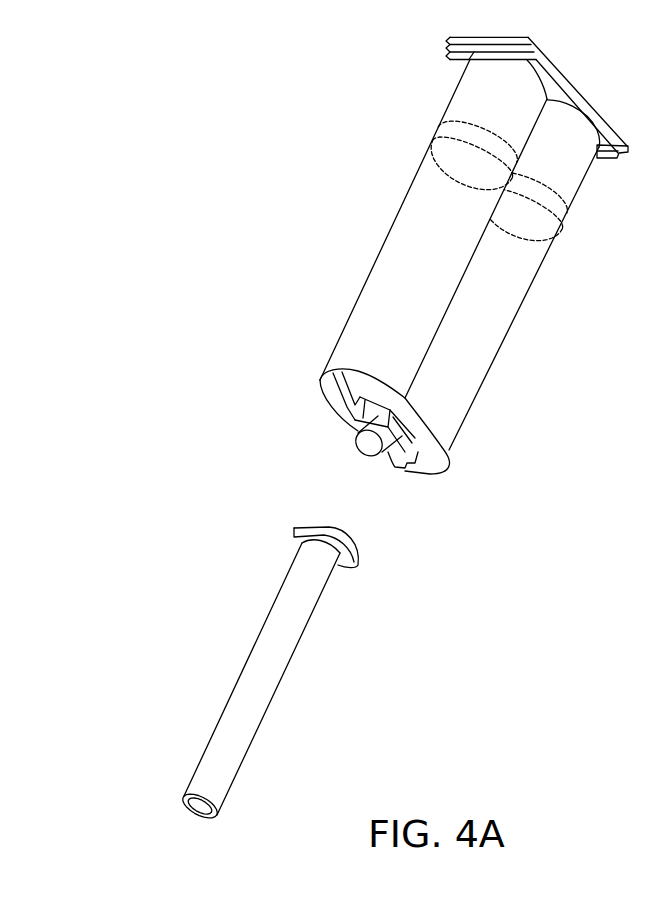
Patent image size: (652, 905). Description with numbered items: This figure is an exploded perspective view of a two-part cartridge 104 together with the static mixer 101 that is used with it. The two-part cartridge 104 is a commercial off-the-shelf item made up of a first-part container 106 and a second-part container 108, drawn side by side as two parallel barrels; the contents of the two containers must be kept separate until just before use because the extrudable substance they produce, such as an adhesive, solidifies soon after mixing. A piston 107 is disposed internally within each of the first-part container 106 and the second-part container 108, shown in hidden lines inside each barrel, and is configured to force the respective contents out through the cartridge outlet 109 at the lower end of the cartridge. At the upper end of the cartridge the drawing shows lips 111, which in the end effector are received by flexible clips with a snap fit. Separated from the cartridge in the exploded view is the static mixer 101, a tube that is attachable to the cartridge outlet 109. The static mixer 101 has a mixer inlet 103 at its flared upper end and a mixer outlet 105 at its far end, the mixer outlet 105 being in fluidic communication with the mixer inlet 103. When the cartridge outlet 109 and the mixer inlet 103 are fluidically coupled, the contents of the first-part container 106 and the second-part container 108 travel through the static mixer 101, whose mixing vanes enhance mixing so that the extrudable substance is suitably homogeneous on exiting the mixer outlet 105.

The static mixer 101 is at (238, 686).
The mixer inlet 103 is at (279, 544).
The two-part cartridge 104 is at (380, 256).
The mixer outlet 105 is at (169, 810).
The first-part container 106 is at (343, 328).
The piston 107 is at (438, 130).
The second-part container 108 is at (477, 398).
The cartridge outlet 109 is at (342, 453).
The lips 111 is at (547, 63).